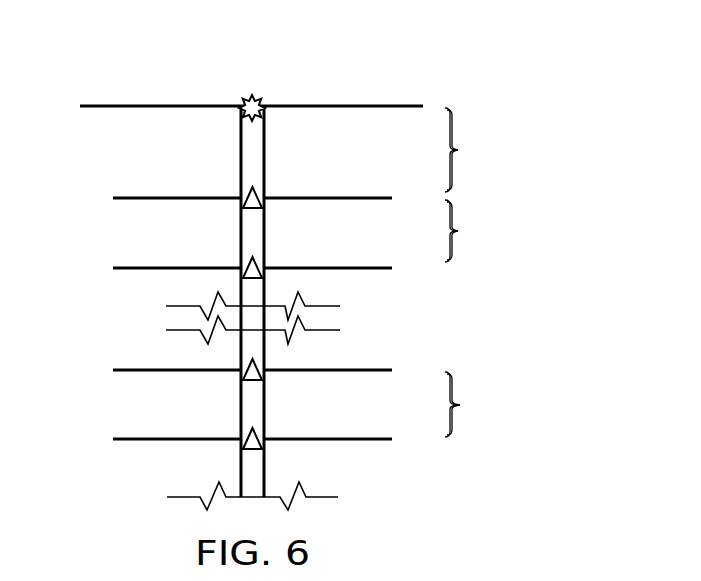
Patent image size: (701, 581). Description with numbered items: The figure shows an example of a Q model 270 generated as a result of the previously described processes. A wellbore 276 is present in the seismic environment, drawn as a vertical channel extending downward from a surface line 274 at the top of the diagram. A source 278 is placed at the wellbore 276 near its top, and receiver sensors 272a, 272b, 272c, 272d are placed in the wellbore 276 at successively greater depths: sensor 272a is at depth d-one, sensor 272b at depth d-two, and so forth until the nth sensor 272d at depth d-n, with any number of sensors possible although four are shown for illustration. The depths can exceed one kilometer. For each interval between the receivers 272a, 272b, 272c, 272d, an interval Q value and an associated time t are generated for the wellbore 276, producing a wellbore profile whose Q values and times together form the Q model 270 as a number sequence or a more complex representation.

The Q model 270 is at (383, 67).
The start line / reference level 274 is at (113, 105).
The wellbore 276 is at (275, 90).
The source 278 is at (254, 123).
The sensor 272a is at (254, 211).
The sensor 272b is at (253, 256).
The sensor 272c is at (253, 383).
The sensor 272d is at (253, 452).